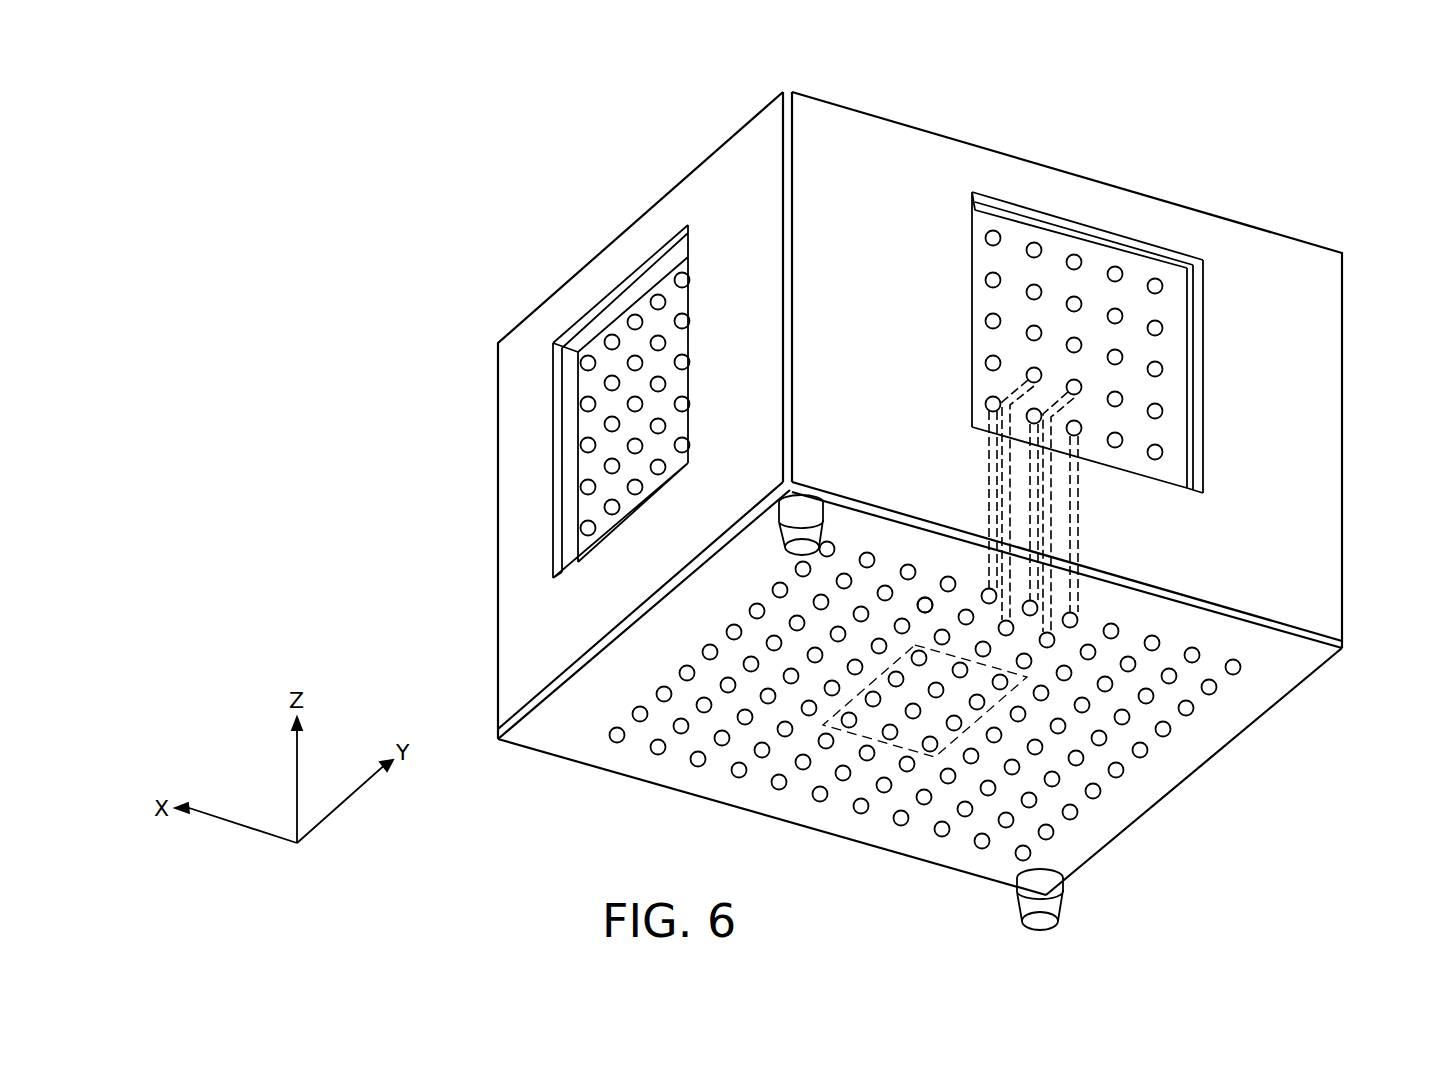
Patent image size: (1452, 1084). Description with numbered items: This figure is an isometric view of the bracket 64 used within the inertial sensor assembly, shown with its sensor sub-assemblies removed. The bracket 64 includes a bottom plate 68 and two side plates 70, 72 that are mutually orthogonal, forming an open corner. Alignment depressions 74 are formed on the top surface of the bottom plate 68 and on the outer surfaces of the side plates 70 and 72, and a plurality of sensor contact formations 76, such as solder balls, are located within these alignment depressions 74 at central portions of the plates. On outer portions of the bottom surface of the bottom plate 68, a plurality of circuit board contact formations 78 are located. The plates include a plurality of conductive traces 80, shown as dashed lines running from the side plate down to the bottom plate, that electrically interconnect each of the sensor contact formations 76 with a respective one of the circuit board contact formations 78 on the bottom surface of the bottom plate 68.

The bracket 64 is at (787, 90).
The bottom plate 68 is at (540, 740).
The side plate 70 is at (1345, 317).
The side plate 72 is at (527, 426).
The alignment depressions 74 is at (613, 290).
The sensor contact formations 76 is at (993, 231).
The circuit board contact formations 78 is at (1187, 717).
The conductive traces 80 is at (1077, 497).